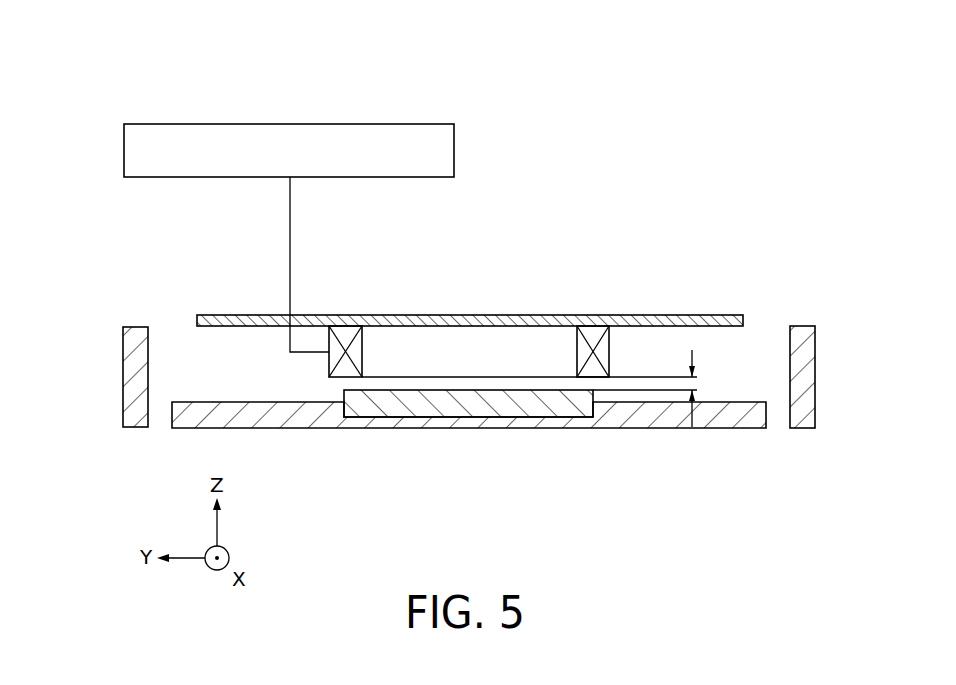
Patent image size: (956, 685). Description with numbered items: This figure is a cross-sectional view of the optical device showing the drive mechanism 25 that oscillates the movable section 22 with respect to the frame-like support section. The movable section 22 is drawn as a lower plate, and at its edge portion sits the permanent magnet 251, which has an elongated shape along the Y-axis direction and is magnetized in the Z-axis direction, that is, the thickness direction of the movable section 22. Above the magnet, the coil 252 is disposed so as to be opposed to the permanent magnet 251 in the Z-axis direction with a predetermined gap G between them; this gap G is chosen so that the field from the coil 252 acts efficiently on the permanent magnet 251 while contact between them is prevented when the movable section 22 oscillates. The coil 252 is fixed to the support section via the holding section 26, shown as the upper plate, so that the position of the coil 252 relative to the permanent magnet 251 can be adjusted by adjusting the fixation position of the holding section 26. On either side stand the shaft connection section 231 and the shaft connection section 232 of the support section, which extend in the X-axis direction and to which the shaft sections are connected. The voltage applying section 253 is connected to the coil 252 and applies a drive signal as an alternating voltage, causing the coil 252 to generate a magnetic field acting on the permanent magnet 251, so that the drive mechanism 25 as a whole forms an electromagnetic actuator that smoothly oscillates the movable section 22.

The movable section 22 is at (655, 415).
The drive mechanism 25 is at (500, 218).
The holding section 26 is at (548, 318).
The shaft connection section 231 is at (805, 350).
The shaft connection section 232 is at (132, 350).
The permanent magnet 251 is at (510, 407).
The coil 252 is at (428, 357).
The voltage applying section 253 is at (228, 122).
The gap G is at (700, 383).